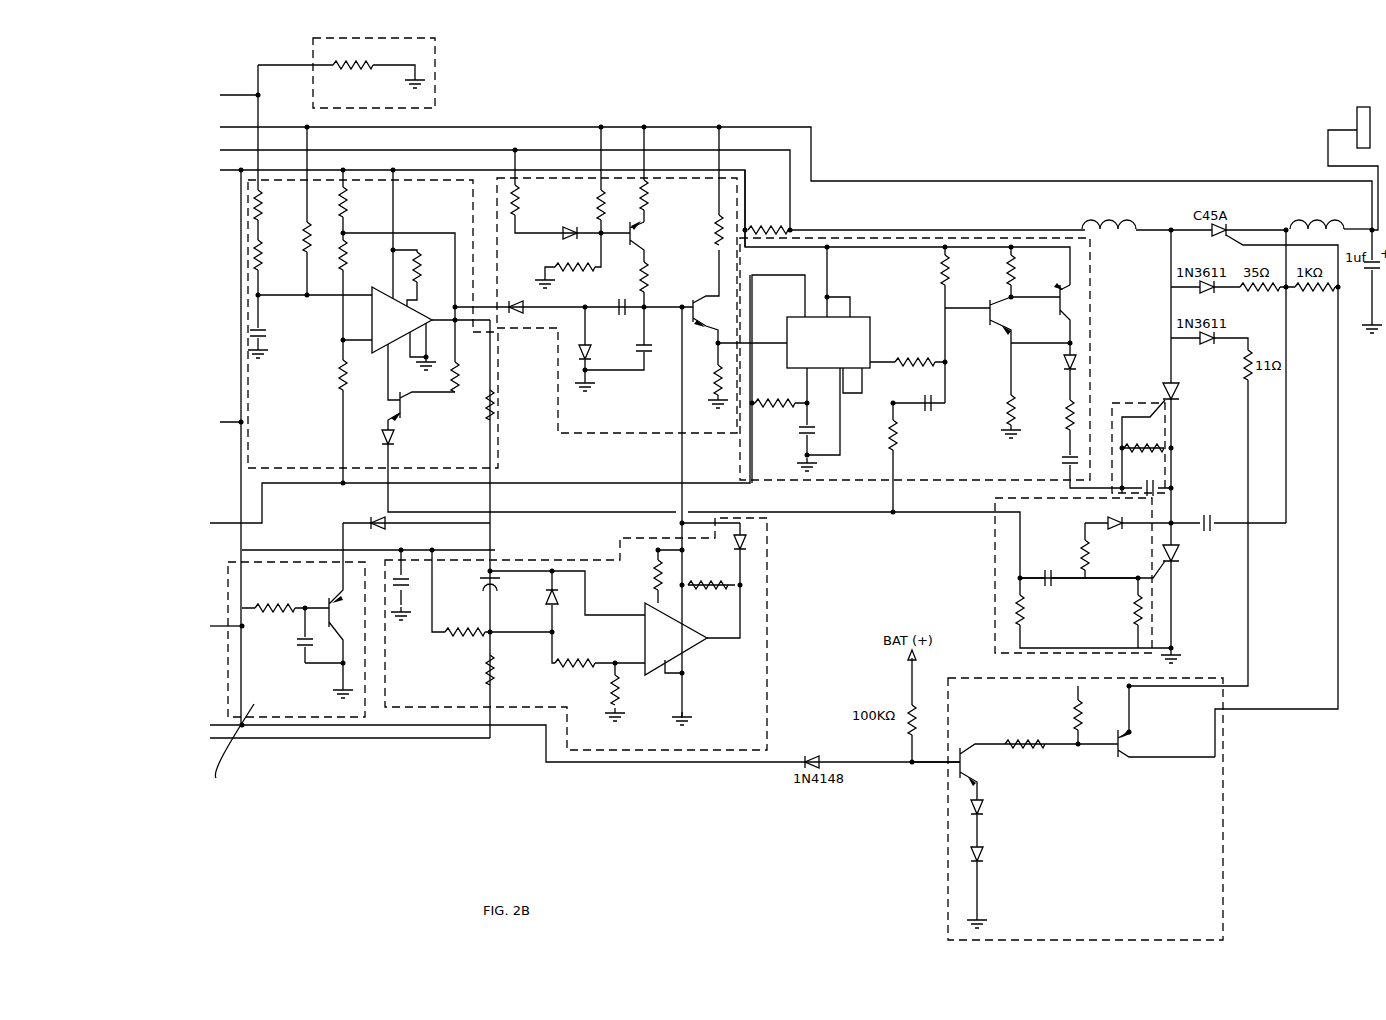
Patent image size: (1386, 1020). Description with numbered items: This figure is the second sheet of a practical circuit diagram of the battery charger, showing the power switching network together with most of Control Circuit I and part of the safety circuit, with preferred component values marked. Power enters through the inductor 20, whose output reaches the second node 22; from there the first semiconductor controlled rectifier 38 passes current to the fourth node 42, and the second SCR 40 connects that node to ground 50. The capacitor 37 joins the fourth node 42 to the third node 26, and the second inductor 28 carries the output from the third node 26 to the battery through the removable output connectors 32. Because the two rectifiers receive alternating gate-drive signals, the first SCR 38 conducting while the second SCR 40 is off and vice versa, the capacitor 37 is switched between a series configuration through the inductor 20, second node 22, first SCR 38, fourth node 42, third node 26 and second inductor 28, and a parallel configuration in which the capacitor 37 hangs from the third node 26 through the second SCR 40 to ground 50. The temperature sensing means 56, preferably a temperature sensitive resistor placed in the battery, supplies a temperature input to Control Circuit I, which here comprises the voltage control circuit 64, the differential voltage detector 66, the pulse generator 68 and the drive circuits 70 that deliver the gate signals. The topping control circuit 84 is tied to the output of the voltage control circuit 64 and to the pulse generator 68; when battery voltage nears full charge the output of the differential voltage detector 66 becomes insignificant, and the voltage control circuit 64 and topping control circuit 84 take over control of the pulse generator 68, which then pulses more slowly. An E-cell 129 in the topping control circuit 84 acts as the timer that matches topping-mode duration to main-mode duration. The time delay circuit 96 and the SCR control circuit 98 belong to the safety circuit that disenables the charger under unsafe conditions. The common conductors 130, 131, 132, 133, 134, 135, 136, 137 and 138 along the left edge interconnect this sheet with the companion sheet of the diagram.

The inductor 20 is at (1114, 220).
The second node 22 is at (1172, 228).
The third node 26 is at (1284, 226).
The second inductor 28 is at (1338, 222).
The removable output connectors 32 is at (1354, 107).
The capacitor 37 is at (1240, 508).
The first semiconductor controlled rectifier (SCR) 38 is at (1162, 386).
The second SCR 40 is at (1180, 568).
The fourth node 42 is at (1174, 522).
The ground 50 is at (1213, 648).
The temperature sensing means 56 is at (452, 66).
The voltage control circuit 64 is at (498, 455).
The differential voltage detector 66 is at (627, 435).
The pulse generator 68 is at (866, 482).
The drive circuits 70 is at (995, 551).
The topping control circuit 84 is at (767, 630).
The time delay circuit 96 is at (339, 717).
The SCR control circuit 98 is at (1223, 818).
The E-cell 129 is at (495, 580).
The common conductor 130 is at (220, 95).
The common conductor 131 is at (220, 127).
The common conductor 132 is at (220, 150).
The common conductor 133 is at (220, 170).
The common conductor 134 is at (220, 422).
The common conductor 135 is at (212, 523).
The common conductor 136 is at (210, 626).
The common conductor 137 is at (210, 725).
The common conductor 138 is at (210, 738).